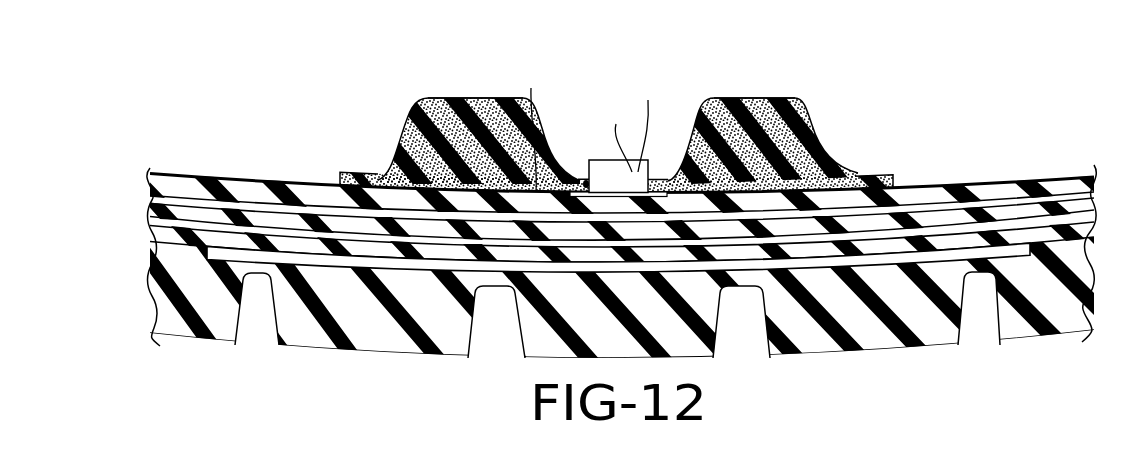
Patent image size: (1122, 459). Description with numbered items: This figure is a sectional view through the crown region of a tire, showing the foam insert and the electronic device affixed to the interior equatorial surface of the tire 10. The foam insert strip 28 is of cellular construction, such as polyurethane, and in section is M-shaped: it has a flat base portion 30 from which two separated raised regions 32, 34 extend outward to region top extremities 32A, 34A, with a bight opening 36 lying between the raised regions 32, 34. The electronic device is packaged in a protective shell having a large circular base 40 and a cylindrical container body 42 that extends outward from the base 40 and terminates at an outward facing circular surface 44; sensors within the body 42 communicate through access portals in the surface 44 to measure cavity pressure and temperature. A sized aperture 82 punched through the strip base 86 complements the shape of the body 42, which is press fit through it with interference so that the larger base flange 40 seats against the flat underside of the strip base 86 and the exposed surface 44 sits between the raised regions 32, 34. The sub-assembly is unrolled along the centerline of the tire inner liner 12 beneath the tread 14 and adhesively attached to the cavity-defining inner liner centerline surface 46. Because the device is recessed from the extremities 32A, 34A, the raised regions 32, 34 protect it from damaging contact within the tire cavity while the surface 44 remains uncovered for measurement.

The tire tread assembly 10 is at (588, 265).
The inner liner 12 is at (986, 184).
The tread 14 is at (538, 357).
The foam insert strip 28 is at (476, 116).
The flat base portion 30 is at (345, 172).
The raised region 32 is at (814, 135).
The region top extremity 32A is at (750, 98).
The raised region 34 is at (424, 135).
The region top extremity 34A is at (489, 98).
The bight opening 36 is at (762, 112).
The circular base 40 is at (620, 135).
The cylindrical container body 42 is at (647, 125).
The outward facing circular surface 44 is at (616, 140).
The inner liner centerline surface 46 is at (530, 128).
The aperture 82 is at (654, 183).
The strip base 86 is at (584, 181).